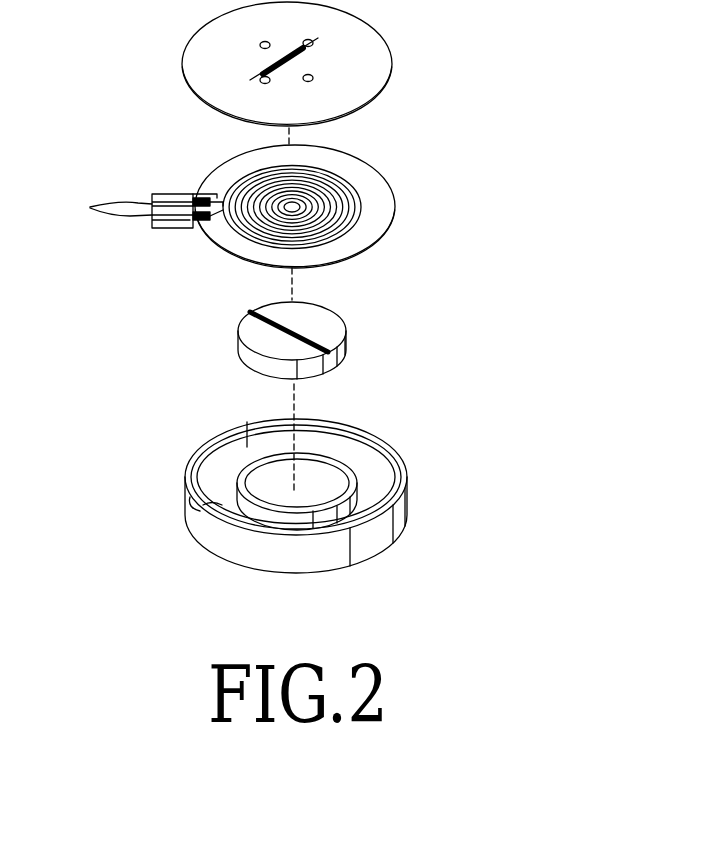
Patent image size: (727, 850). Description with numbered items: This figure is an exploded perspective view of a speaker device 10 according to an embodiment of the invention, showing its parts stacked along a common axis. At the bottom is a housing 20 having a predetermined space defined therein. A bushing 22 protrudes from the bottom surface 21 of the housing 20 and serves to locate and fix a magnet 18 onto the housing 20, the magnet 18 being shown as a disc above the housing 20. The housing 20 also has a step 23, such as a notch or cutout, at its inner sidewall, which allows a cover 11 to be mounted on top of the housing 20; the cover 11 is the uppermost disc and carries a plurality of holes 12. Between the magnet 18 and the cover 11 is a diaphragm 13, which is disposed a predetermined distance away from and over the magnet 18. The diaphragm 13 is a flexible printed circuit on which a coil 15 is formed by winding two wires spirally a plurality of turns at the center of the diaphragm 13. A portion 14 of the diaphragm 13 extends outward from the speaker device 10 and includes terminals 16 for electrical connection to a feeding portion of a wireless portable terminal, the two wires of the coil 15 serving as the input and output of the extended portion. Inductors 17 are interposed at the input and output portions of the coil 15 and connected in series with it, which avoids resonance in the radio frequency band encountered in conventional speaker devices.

The speaker device 10 is at (543, 197).
The cover 11 is at (366, 80).
The holes 12 is at (318, 38).
The diaphragm 13 is at (392, 192).
The portion of the diaphragm 14 is at (170, 223).
The coil 15 is at (363, 223).
The terminals 16 is at (107, 203).
The inductors 17 is at (188, 213).
The magnet 18 is at (335, 330).
The housing 20 is at (407, 495).
The bottom surface 21 is at (222, 505).
The bushing 22 is at (247, 422).
The step 23 is at (380, 450).